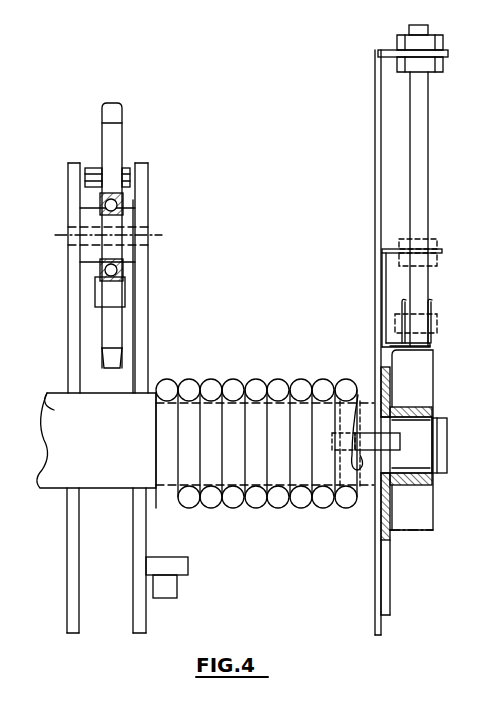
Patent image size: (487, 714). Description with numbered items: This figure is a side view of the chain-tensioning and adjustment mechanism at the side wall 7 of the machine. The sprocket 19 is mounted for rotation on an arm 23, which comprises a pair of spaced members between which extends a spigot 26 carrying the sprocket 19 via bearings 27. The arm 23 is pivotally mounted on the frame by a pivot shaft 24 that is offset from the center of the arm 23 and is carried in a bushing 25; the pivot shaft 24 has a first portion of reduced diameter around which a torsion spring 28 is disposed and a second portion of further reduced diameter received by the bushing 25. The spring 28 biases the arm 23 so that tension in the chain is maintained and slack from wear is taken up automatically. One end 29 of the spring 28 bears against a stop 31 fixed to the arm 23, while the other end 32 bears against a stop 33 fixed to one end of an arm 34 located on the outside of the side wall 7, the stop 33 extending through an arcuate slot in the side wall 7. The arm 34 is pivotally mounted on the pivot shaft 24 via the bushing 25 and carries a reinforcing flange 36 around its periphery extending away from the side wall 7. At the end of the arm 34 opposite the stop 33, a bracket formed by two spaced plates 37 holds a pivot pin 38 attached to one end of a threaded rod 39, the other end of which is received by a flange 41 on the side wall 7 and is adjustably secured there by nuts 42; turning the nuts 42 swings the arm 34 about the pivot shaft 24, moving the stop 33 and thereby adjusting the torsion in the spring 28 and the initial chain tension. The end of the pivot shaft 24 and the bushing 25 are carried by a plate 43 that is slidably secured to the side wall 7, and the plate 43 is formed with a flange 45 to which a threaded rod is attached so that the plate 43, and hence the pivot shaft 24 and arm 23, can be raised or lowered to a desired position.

The side wall 7 is at (375, 206).
The sprocket 19 is at (118, 128).
The arm 23 is at (142, 300).
The pivot shaft 24 is at (55, 400).
The bushing 25 is at (432, 476).
The spigot 26 is at (130, 225).
The bearing 27 is at (117, 200).
The torsion spring 28 is at (272, 510).
The one end of spring 29 is at (168, 590).
The stop 31 is at (180, 566).
The other end of spring 32 is at (330, 507).
The stop 33 is at (374, 440).
The arm 34 is at (392, 396).
The reinforcing flange 36 is at (422, 357).
The spaced plates 37 is at (403, 305).
The pivot pin 38 is at (438, 323).
The threaded rod 39 is at (430, 186).
The flange 41 is at (446, 56).
The nuts 42 is at (396, 66).
The plate 43 is at (387, 282).
The flange 45 is at (441, 250).